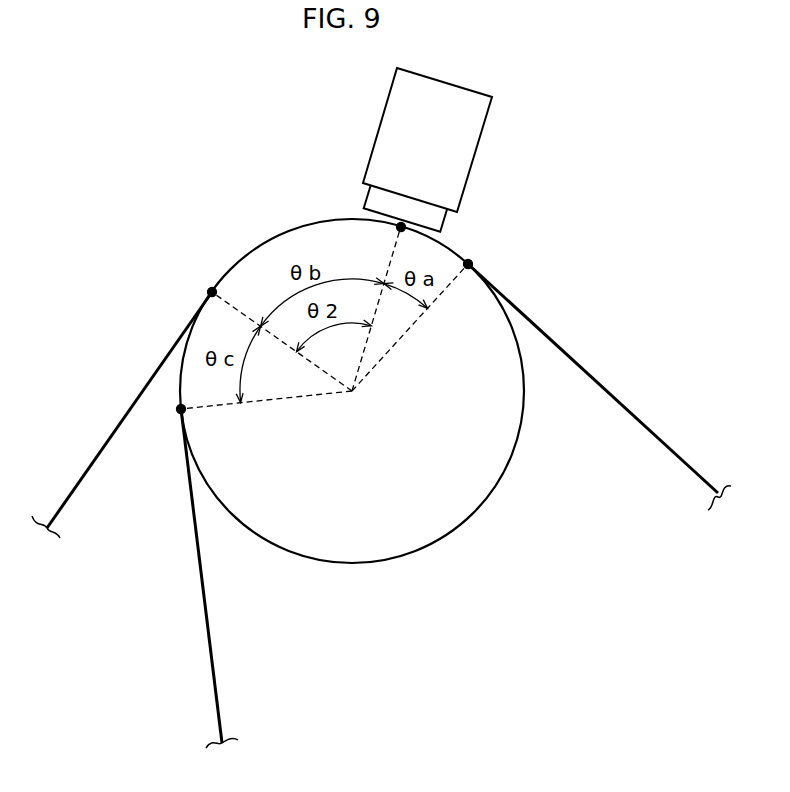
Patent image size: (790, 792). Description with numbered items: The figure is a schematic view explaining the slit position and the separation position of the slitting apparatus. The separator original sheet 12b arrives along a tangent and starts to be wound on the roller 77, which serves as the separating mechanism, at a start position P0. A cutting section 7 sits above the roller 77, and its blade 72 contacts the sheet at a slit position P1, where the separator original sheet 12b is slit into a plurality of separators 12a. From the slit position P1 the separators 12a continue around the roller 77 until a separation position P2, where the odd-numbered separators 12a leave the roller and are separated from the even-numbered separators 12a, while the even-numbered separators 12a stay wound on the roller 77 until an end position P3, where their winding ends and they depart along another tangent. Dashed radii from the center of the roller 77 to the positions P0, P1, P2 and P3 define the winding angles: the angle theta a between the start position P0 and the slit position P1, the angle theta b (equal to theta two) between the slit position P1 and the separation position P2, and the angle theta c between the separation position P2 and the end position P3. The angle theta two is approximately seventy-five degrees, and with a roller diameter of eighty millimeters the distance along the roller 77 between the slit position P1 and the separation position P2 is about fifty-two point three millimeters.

The cutting section 7 is at (482, 153).
The blade 72 is at (444, 217).
The roller 77 is at (451, 532).
The separator 12a is at (95, 460).
The separator original sheet 12b is at (632, 410).
The start position P0 is at (472, 265).
The slit position P1 is at (397, 228).
The separation position P2 is at (209, 289).
The end position P3 is at (177, 412).